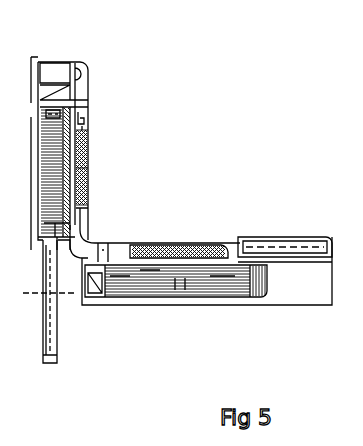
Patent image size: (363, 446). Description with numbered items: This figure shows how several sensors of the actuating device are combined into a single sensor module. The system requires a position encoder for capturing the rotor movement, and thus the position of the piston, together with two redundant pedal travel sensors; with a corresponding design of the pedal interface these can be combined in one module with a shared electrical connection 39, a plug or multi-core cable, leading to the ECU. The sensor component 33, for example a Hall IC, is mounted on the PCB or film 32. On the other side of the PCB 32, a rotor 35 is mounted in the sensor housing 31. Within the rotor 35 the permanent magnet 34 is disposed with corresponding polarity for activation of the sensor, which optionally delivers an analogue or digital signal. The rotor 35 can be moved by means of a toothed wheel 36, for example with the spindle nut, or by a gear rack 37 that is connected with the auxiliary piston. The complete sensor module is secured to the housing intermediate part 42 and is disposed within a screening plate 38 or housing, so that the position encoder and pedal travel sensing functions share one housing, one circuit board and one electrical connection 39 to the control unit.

The sensor housing 31 is at (73, 96).
The PCB or film 32 is at (89, 117).
The sensor component of rotation angle sensor 33 is at (88, 155).
The magnet 34 is at (88, 179).
The rotor 35 is at (88, 213).
The toothed wheel 36 is at (50, 328).
The gear rack 37 is at (248, 298).
The screening plate 38 is at (188, 247).
The electrical connection 39 is at (265, 238).
The housing intermediate part 42 is at (36, 57).